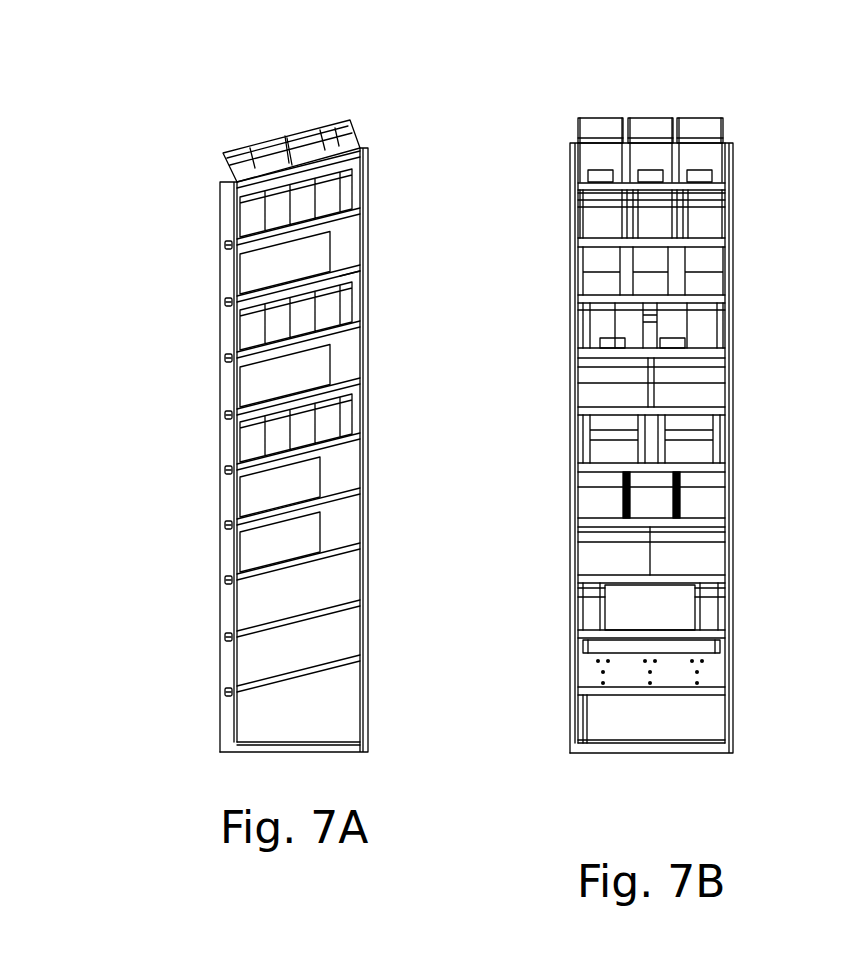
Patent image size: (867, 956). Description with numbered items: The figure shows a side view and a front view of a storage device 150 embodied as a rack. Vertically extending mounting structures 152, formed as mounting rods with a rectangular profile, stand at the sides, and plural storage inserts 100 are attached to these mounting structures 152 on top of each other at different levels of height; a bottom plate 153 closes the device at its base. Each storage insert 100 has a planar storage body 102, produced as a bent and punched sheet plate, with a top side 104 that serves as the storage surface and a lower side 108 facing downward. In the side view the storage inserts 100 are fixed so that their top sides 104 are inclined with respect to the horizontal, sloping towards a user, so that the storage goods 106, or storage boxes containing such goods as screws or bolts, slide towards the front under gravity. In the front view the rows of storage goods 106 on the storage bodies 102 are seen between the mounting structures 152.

In FIG. 7A, the storage insert 100 is at (208, 305).
In FIG. 7B, the storage insert 100 is at (746, 243).
In FIG. 7A, the storage body 102 is at (343, 262).
In FIG. 7B, the storage body 102 is at (596, 357).
In FIG. 7A, the top side 104 is at (350, 262).
In FIG. 7A, the storage goods 106 is at (290, 265).
In FIG. 7B, the storage goods 106 is at (648, 217).
In FIG. 7A, the lower side 108 is at (348, 270).
In FIG. 7A, the storage device 150 is at (311, 395).
In FIG. 7B, the storage device 150 is at (657, 433).
In FIG. 7A, the mounting structure 152 is at (220, 618).
In FIG. 7B, the mounting structure 152 is at (733, 612).
In FIG. 7A, the bottom plate 153 is at (258, 742).
In FIG. 7B, the bottom plate 153 is at (598, 745).